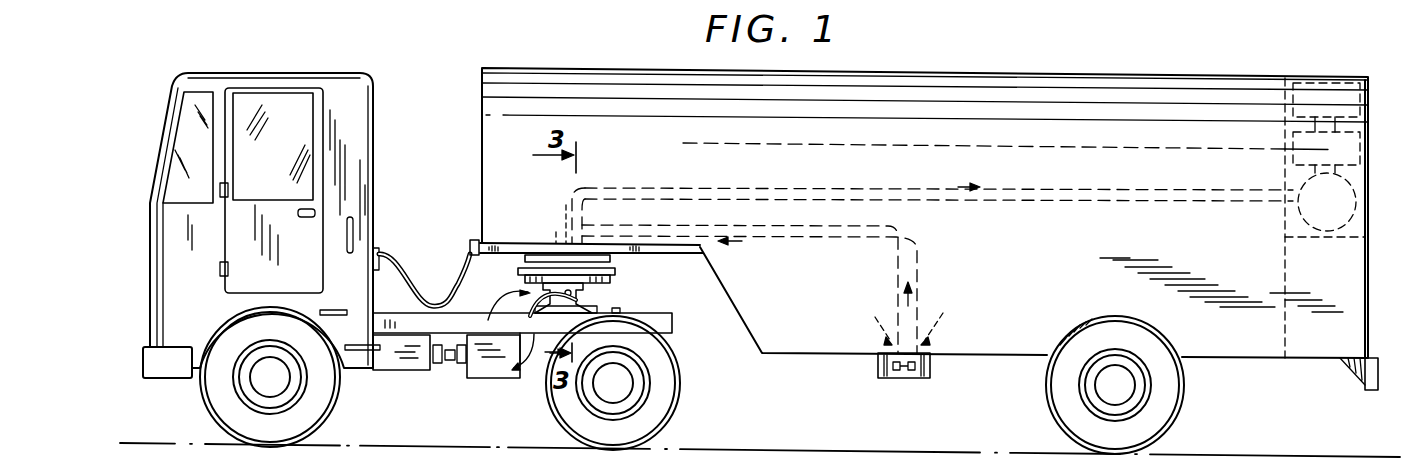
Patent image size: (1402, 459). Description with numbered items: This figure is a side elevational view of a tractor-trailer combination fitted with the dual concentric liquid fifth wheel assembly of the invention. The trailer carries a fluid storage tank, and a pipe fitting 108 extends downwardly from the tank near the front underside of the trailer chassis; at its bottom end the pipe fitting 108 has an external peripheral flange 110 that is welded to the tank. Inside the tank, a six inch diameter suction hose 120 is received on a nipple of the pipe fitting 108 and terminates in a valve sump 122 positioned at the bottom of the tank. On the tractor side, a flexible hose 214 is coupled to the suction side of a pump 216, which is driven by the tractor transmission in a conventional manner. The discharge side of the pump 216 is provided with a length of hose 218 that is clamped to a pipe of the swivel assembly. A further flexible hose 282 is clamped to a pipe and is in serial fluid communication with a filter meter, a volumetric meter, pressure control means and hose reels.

The pipe fitting 108 is at (565, 215).
The external peripheral flange 110 is at (557, 238).
The suction hose 120 is at (910, 245).
The valve sump 122 is at (932, 377).
The flexible hose 214 is at (514, 358).
The pump 216 is at (475, 372).
The hose 218 is at (490, 306).
The flexible hose 282 is at (810, 190).